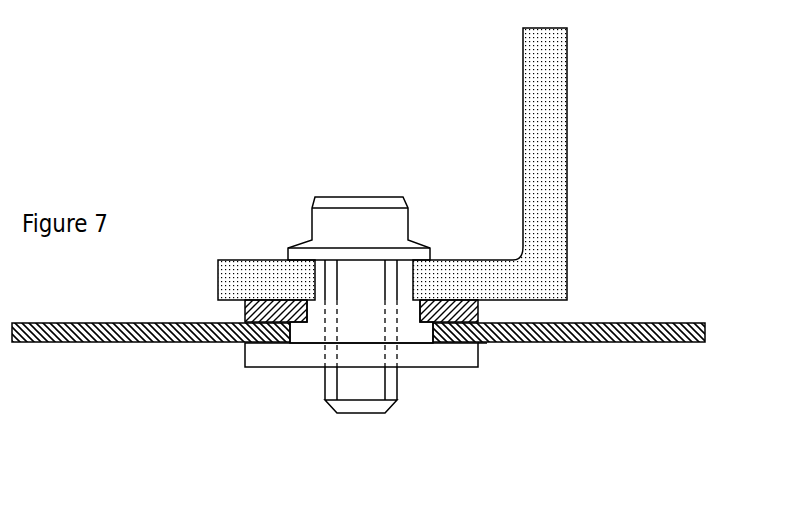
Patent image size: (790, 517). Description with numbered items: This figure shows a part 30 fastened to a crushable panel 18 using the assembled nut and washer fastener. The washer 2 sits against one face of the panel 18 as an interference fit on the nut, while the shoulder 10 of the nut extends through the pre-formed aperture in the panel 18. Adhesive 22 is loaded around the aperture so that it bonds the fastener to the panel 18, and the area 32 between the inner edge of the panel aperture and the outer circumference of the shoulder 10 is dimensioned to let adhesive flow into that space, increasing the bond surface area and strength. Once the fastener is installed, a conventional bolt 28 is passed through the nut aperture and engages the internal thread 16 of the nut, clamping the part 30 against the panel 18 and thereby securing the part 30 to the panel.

The washer 2 is at (480, 310).
The shoulder 10 is at (410, 330).
The internal thread 16 is at (330, 353).
The crushable panel 18 is at (707, 327).
The adhesive 22 is at (487, 343).
The bolt 28 is at (317, 212).
The part 30 is at (550, 133).
The area between panel aperture and shoulder 32 is at (253, 343).